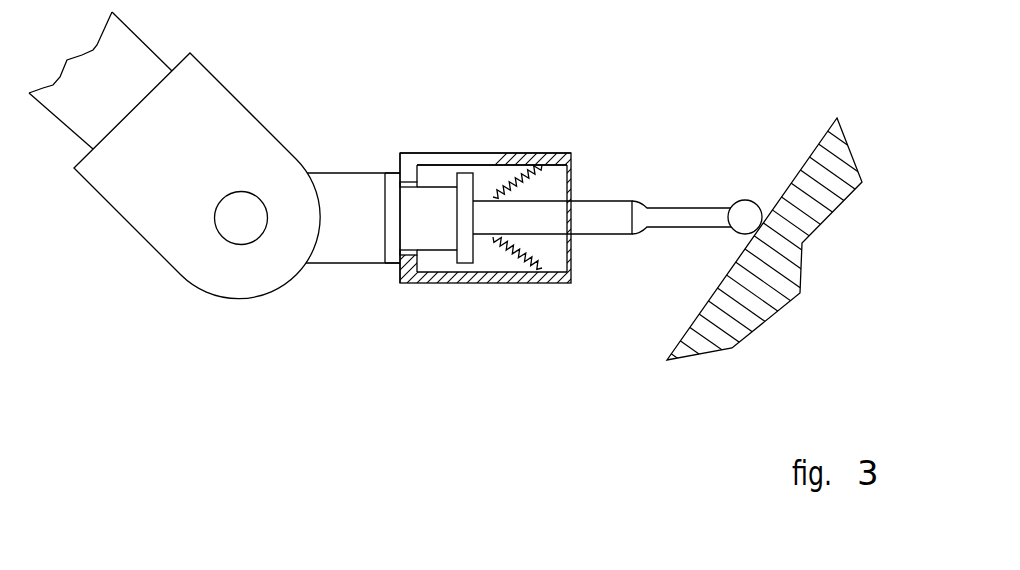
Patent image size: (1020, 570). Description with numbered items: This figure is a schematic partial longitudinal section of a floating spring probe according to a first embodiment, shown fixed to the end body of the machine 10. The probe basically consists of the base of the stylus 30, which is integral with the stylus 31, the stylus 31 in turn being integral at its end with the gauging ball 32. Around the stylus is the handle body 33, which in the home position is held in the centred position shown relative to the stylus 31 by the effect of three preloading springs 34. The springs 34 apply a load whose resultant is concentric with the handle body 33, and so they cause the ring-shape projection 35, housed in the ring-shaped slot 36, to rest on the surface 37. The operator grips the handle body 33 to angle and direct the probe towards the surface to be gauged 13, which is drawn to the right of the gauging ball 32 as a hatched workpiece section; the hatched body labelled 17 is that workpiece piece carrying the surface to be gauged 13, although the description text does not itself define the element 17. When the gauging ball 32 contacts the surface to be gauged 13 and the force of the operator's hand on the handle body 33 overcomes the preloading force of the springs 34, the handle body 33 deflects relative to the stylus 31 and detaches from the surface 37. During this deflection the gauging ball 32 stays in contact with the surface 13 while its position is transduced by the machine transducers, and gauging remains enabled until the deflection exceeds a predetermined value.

The machine 10 is at (355, 213).
The surface to be gauged 13 is at (685, 328).
The pedal contact plate 17 is at (837, 163).
The base of the stylus 30 is at (428, 222).
The stylus 31 is at (665, 217).
The gauging ball 32 is at (743, 217).
The handle body 33 is at (545, 155).
The preloading springs 34 is at (542, 160).
The ring-shape projection 35 is at (415, 255).
The ring-shaped slot 36 is at (443, 260).
The surface 37 is at (400, 173).